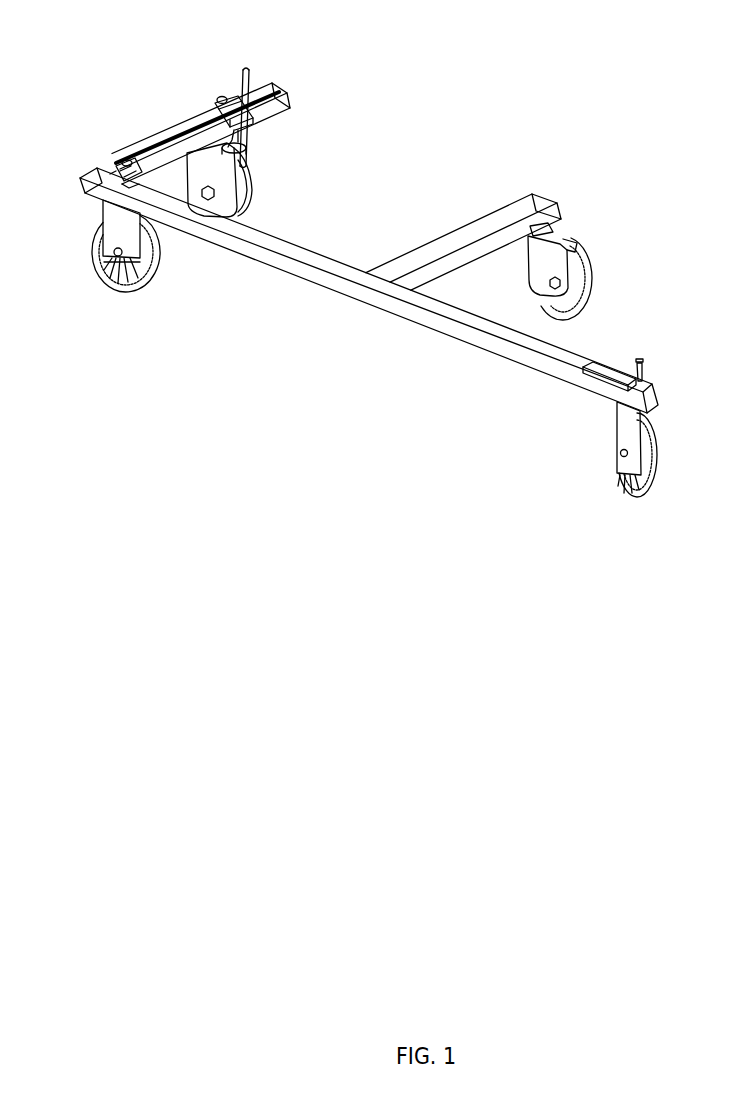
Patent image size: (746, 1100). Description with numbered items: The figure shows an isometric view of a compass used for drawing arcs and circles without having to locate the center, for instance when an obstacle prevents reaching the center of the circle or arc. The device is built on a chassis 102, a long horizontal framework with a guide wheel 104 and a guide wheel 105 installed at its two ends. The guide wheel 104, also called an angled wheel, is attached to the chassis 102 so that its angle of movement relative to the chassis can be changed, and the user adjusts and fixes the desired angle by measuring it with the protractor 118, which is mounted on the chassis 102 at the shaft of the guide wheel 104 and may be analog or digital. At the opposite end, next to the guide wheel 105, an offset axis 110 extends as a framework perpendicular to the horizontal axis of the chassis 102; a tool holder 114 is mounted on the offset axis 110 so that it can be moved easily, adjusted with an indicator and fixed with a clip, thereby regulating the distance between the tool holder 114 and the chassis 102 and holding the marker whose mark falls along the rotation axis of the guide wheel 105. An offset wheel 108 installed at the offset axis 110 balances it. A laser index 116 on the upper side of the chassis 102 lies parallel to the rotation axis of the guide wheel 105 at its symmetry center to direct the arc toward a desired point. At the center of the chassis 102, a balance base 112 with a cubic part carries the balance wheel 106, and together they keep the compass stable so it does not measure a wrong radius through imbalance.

The chassis 102 is at (283, 270).
The guide wheel 104 is at (630, 473).
The guide wheel 105 is at (140, 290).
The balance wheel 106 is at (587, 287).
The offset wheel 108 is at (230, 197).
The offset axis 110 is at (162, 135).
The balance base 112 is at (452, 232).
The tool holder 114 is at (231, 101).
The laser index 116 is at (140, 189).
The protractor 118 is at (613, 367).